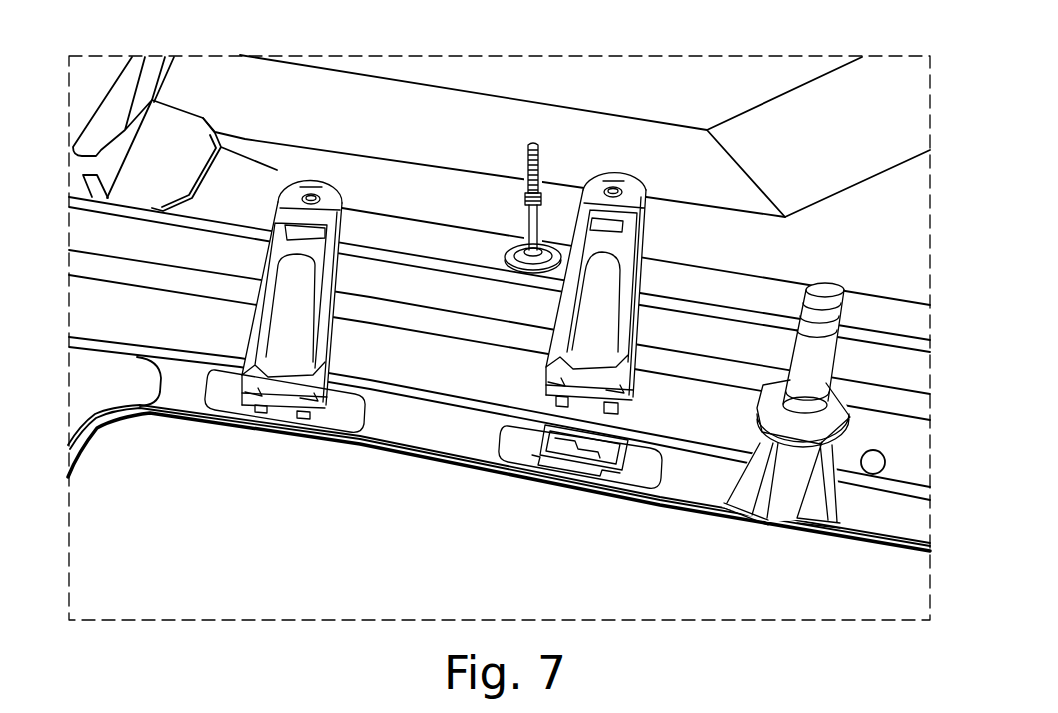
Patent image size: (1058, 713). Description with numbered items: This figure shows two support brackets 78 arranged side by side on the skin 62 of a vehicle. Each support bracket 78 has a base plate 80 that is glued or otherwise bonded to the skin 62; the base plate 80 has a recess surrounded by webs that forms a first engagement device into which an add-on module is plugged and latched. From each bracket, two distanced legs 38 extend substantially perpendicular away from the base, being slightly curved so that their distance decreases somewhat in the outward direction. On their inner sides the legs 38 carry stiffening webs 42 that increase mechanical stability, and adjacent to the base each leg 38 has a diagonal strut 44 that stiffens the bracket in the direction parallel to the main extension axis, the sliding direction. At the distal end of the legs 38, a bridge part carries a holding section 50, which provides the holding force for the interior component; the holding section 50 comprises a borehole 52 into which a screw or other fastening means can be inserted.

The leg 38 is at (335, 332).
The stiffening web 42 is at (320, 255).
The diagonal strut 44 is at (255, 420).
The holding section 50 is at (290, 195).
The borehole 52 is at (350, 199).
The skin 62 is at (395, 517).
The support bracket 78 is at (312, 192).
The base plate 80 is at (350, 430).